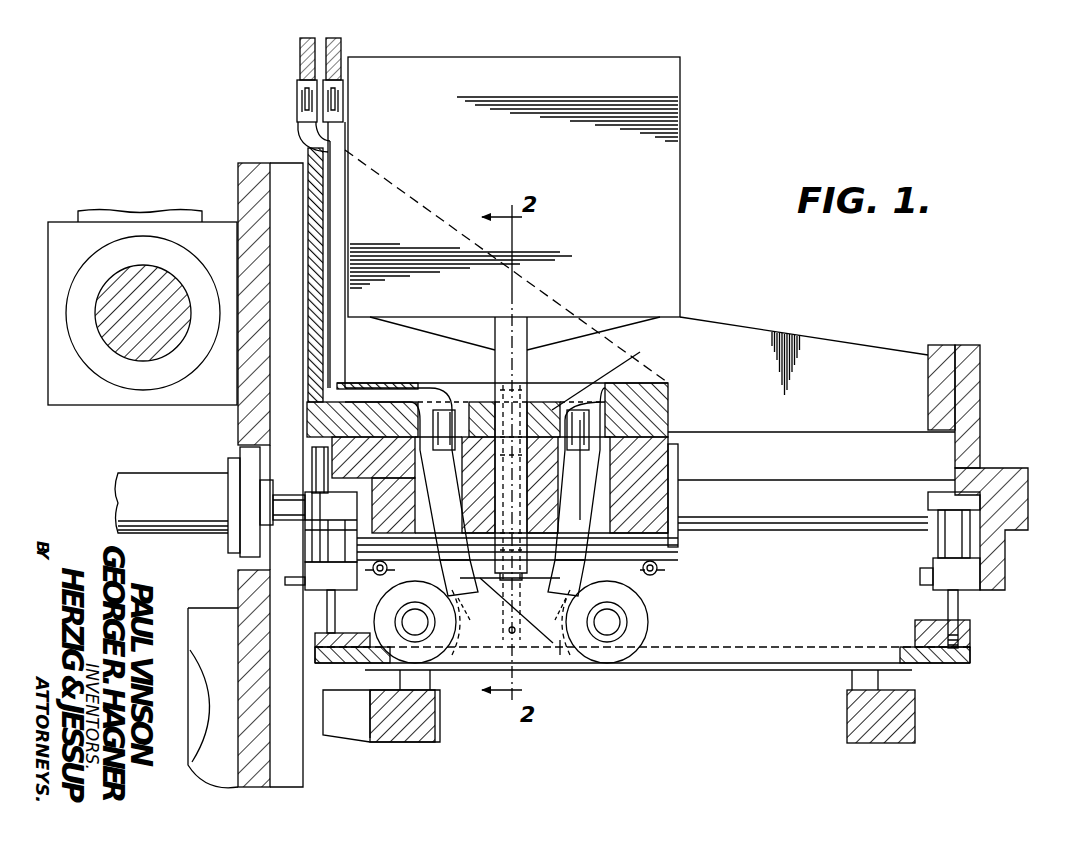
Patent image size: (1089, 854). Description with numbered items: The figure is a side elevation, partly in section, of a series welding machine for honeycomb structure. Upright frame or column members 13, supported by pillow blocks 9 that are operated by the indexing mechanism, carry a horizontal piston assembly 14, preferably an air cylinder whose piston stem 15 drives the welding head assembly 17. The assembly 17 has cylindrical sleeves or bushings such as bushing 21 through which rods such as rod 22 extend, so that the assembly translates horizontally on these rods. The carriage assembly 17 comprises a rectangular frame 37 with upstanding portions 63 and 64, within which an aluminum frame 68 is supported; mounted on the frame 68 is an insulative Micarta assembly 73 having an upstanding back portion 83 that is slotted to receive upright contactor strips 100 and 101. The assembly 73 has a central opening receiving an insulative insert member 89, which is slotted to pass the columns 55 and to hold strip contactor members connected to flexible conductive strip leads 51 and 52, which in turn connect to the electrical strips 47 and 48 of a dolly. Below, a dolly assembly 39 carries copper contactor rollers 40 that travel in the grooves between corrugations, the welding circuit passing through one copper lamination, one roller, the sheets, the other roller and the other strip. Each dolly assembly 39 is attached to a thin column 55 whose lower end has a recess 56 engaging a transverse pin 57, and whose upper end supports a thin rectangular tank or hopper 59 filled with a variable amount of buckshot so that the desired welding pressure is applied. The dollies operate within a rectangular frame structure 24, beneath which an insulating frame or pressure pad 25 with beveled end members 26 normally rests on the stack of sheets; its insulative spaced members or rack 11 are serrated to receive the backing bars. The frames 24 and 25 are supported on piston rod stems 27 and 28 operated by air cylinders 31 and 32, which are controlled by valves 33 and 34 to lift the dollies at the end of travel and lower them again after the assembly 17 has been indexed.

The pillow block 9 is at (48, 279).
The rack 11 is at (850, 682).
The frame or column member 13 is at (238, 176).
The piston assembly 14 is at (168, 474).
The piston stem or rod 15 is at (287, 496).
The welding head assembly 17 is at (700, 345).
The cylindrical sleeve or bushing 21 is at (678, 554).
The rod 22 is at (824, 524).
The rectangular frame structure 24 is at (845, 614).
The rectangular frame or pressure pad 25 is at (950, 664).
The beveled inner side 26 is at (392, 665).
The piston rod stem 27 is at (332, 608).
The piston rod stem 28 is at (958, 611).
The air cylinder 31 is at (322, 552).
The air cylinder 32 is at (968, 533).
The valve 33 is at (320, 586).
The valve 34 is at (975, 574).
The rectangular frame 37 is at (557, 300).
The dolly assembly 39 is at (560, 642).
The contactor roller 40 is at (635, 607).
The electrical strip 47 is at (445, 574).
The electrical strip 48 is at (580, 576).
The flexible conductive strip lead 51 is at (445, 490).
The flexible conductive strip lead 52 is at (582, 516).
The column 55 is at (510, 478).
The recess 56 is at (526, 617).
The transverse pin 57 is at (509, 630).
The tank or hopper 59 is at (665, 170).
The upstanding portion 63 is at (318, 455).
The upstanding portion 64 is at (678, 476).
The aluminum frame 68 is at (660, 452).
The insulative assembly 73 is at (672, 408).
The upstanding back portion 83 is at (308, 148).
The insulative insert member 89 is at (605, 372).
The contactor strip 100 is at (300, 122).
The contactor strip 101 is at (345, 126).